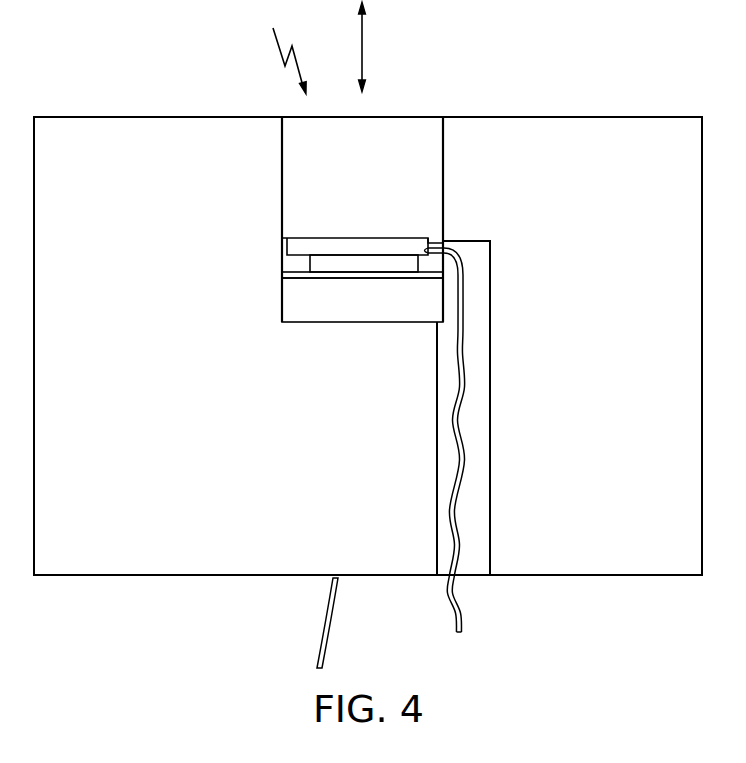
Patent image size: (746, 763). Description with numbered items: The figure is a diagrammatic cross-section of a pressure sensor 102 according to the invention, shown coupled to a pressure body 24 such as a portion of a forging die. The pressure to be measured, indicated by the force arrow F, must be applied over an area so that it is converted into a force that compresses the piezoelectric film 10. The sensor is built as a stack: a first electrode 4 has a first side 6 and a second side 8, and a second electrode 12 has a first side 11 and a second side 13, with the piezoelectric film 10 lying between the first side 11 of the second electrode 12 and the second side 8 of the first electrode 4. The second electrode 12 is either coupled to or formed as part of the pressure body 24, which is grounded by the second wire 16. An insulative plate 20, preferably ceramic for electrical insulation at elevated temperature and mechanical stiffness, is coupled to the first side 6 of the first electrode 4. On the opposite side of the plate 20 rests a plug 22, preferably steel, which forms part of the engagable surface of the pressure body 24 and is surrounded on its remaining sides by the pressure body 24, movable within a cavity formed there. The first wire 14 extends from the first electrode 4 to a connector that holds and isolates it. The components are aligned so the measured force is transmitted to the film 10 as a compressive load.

The pressure sensor 102 is at (279, 47).
The force F is at (364, 38).
The plug 22 is at (288, 200).
The insulative plate 20 is at (282, 242).
The first electrode 4 is at (308, 263).
The piezoelectric film 10 is at (282, 274).
The second electrode 12 is at (281, 305).
The first side 6 is at (451, 241).
The second side 8 is at (458, 262).
The first side 11 is at (464, 288).
The second side 13 is at (464, 332).
The first wire 14 is at (467, 473).
The second wire 16 is at (317, 640).
The pressure body 24 is at (110, 575).